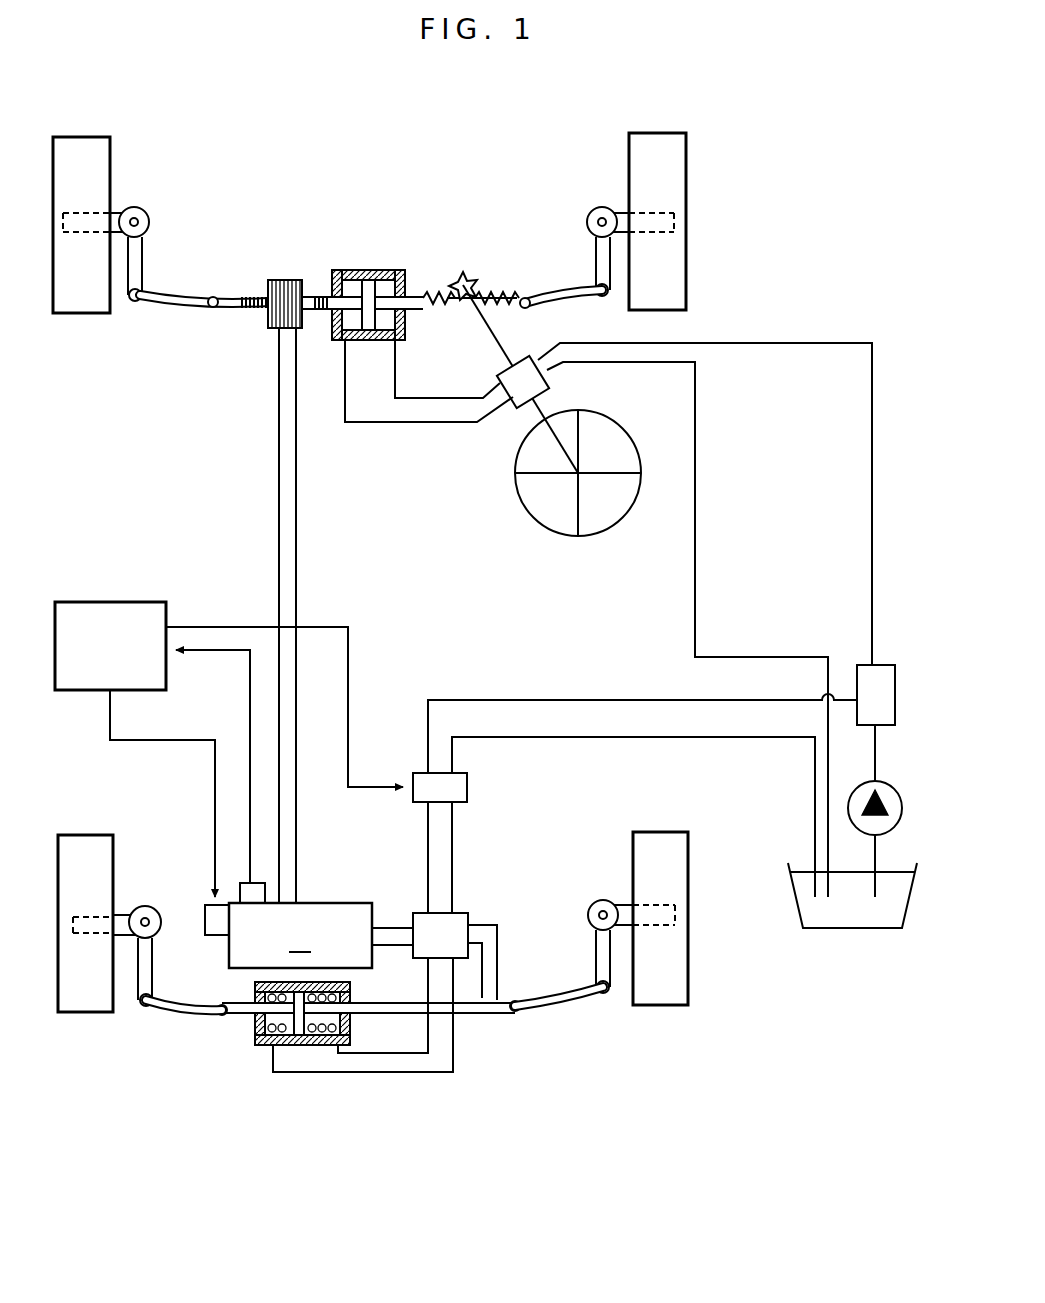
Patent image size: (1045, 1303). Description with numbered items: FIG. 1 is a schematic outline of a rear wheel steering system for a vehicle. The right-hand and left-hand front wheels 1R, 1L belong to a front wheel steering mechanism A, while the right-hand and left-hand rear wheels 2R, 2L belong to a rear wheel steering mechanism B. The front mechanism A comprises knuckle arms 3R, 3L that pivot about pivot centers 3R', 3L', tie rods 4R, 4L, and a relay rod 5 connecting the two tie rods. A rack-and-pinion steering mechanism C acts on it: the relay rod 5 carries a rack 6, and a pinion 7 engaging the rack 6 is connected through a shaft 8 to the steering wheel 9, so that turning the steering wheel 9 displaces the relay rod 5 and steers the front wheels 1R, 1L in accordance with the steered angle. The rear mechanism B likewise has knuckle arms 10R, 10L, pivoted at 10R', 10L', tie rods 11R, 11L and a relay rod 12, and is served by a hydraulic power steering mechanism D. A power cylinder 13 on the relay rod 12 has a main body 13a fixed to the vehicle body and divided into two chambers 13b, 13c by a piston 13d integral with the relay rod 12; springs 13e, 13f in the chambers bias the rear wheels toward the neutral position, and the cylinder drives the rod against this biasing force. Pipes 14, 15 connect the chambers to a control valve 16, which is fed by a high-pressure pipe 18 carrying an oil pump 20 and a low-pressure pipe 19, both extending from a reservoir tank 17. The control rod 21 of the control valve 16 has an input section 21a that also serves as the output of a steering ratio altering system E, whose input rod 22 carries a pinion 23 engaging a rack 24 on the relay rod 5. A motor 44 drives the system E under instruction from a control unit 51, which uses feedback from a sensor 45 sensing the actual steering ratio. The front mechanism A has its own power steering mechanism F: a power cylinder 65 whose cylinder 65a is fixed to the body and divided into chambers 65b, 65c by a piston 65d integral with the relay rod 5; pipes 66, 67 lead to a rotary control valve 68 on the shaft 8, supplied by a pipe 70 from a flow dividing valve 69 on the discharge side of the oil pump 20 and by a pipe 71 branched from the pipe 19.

The left-hand front wheel 1L is at (100, 137).
The right-hand front wheel 1R is at (660, 133).
The left-hand rear wheel 2L is at (102, 835).
The right-hand rear wheel 2R is at (655, 832).
The left-hand knuckle arm 3L is at (165, 242).
The pivot center 3L' is at (138, 183).
The right-hand knuckle arm 3R is at (573, 256).
The pivot center 3R' is at (599, 190).
The left-hand tie rod 4L is at (180, 292).
The right-hand tie rod 4R is at (540, 296).
The relay rod 5 is at (470, 300).
The rack 6 is at (430, 295).
The pinion 7 is at (462, 270).
The shaft 8 is at (548, 395).
The steering wheel 9 is at (633, 505).
The left-hand knuckle arm 10L is at (117, 997).
The left rear knuckle pivot 10L' is at (146, 887).
The right-hand knuckle arm 10R is at (627, 992).
The right rear knuckle pivot 10R' is at (601, 883).
The left-hand tie rod 11L is at (190, 1020).
The right-hand tie rod 11R is at (565, 992).
The relay rod 12 is at (497, 1015).
The power cylinder 13 is at (245, 1015).
The main body 13a is at (290, 1050).
The chamber 13b is at (262, 1045).
The chamber 13c is at (338, 1050).
The piston 13d is at (305, 1050).
The spring 13e is at (260, 990).
The spring 13f is at (340, 990).
The pipe 14 is at (440, 1075).
The pipe 15 is at (455, 1055).
The control valve 16 is at (465, 913).
The reservoir tank 17 is at (818, 930).
The pipe 18 is at (548, 700).
The pipe 19 is at (535, 737).
The oil pump 20 is at (890, 790).
The control rod 21 is at (482, 962).
The input section 21a is at (388, 925).
The input rod 22 is at (298, 585).
The pinion 23 is at (268, 325).
The rack 24 is at (245, 297).
The motor 44 is at (205, 915).
The sensor 45 is at (265, 893).
The control unit 51 is at (229, 749).
The power cylinder 65 is at (335, 270).
The cylinder 65a is at (330, 318).
The chamber 65b is at (345, 292).
The chamber 65c is at (385, 285).
The piston 65d is at (392, 320).
The pipe 66 is at (355, 423).
The pipe 67 is at (420, 400).
The control valve 68 is at (512, 398).
The flow dividing valve 69 is at (880, 665).
The pipe 70 is at (873, 525).
The pipe 71 is at (696, 584).
The front wheel steering mechanism A is at (225, 322).
The rear wheel steering mechanism B is at (155, 1030).
The steering mechanism C is at (505, 485).
The power steering mechanism D is at (305, 1080).
The steering ratio altering system E is at (300, 935).
The power steering mechanism F is at (355, 238).